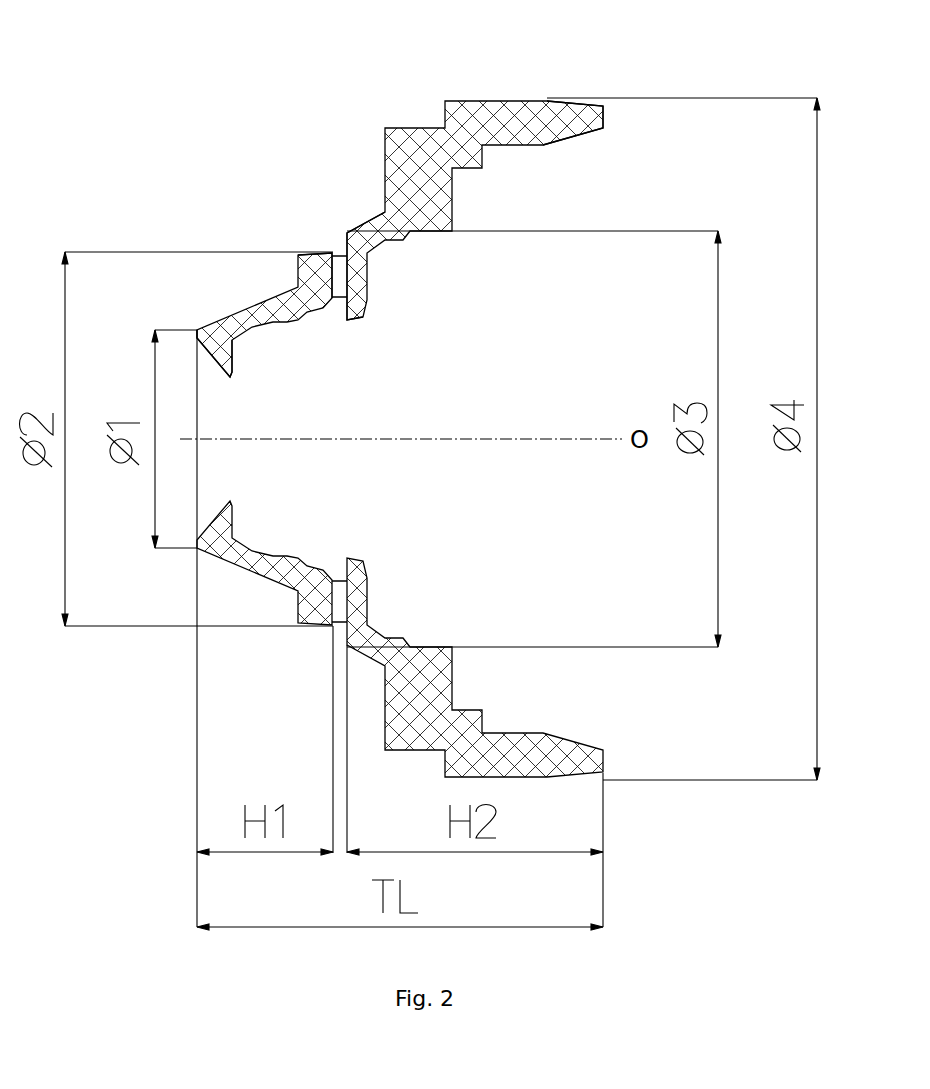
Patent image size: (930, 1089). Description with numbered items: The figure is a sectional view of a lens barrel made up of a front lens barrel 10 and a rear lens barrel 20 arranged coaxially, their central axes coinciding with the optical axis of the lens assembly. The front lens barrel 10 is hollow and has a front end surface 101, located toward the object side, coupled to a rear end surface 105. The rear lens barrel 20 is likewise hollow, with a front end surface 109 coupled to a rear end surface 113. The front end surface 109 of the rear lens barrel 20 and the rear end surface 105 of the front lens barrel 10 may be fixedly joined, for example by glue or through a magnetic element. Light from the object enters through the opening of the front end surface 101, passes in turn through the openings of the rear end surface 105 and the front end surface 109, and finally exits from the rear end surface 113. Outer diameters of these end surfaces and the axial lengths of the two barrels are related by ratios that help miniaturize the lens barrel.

The front lens barrel 10 is at (285, 313).
The front end surface 101 is at (197, 330).
The rear end surface 105 is at (333, 253).
The rear lens barrel 20 is at (470, 130).
The front end surface 109 is at (347, 231).
The rear end surface 113 is at (605, 106).